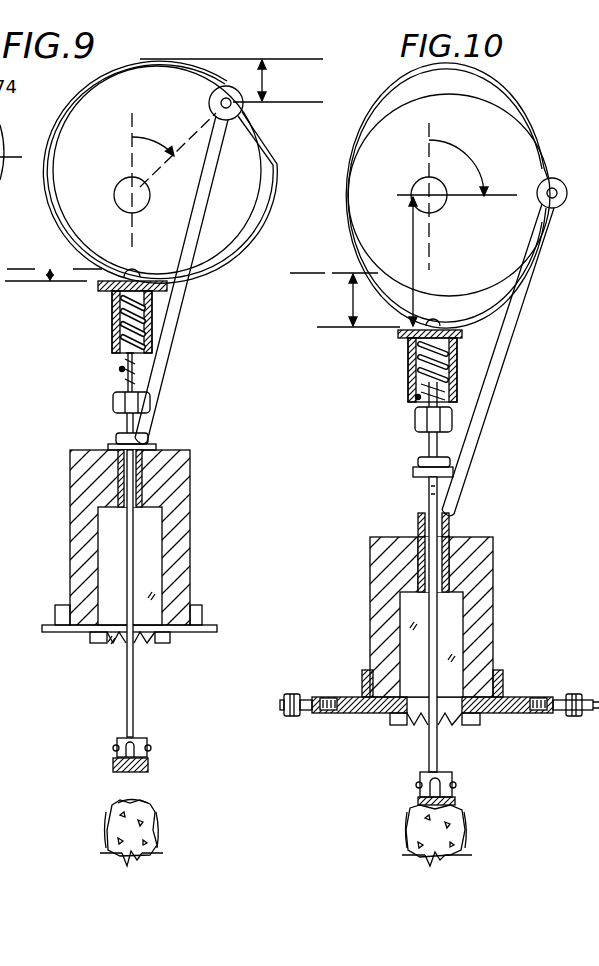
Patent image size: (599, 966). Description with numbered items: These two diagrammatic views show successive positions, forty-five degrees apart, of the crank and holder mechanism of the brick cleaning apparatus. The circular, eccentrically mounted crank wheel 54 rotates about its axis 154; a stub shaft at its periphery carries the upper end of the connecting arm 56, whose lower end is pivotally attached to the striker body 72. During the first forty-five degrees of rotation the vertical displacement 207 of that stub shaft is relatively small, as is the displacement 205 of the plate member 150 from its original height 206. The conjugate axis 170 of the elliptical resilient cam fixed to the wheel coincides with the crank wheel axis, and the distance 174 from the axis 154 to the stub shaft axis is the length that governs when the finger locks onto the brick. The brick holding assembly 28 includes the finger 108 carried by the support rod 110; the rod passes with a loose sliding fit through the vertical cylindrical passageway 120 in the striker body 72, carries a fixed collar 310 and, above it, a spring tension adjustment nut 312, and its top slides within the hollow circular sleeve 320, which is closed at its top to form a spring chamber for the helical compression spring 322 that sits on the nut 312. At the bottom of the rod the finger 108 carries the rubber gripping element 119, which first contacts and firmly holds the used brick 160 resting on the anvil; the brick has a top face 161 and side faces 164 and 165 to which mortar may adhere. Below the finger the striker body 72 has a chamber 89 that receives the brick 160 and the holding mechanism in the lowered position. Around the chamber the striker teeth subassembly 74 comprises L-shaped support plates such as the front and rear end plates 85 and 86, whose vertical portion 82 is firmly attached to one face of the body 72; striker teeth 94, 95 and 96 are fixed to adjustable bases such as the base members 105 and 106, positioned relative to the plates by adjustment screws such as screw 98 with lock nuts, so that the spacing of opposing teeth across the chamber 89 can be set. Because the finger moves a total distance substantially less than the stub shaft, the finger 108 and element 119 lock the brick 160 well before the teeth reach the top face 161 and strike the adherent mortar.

In FIG. 9, the crank wheel 54 is at (150, 105).
In FIG. 10, the crank wheel 54 is at (507, 164).
In FIG. 9, the axis of rotation 154 is at (128, 188).
In FIG. 10, the axis of rotation 154 is at (436, 199).
In FIG. 9, the vertical displacement of stub shaft 207 is at (231, 80).
In FIG. 9, the original height 206 is at (62, 262).
In FIG. 10, the original height 206 is at (355, 271).
In FIG. 9, the vertical displacement 205 is at (48, 277).
In FIG. 10, the vertical displacement 205 is at (353, 300).
In FIG. 9, the plate member 150 is at (168, 290).
In FIG. 10, the plate member 150 is at (398, 336).
In FIG. 9, the hollow circular sleeve 320 is at (112, 326).
In FIG. 10, the hollow circular sleeve 320 is at (408, 370).
In FIG. 9, the helical compression spring 322 is at (120, 370).
In FIG. 10, the helical compression spring 322 is at (416, 398).
In FIG. 9, the connecting arm 56 is at (172, 326).
In FIG. 10, the connecting arm 56 is at (472, 438).
In FIG. 9, the spring tension adjustment nut 312 is at (150, 398).
In FIG. 10, the spring tension adjustment nut 312 is at (415, 425).
In FIG. 9, the collar 310 is at (150, 441).
In FIG. 10, the collar 310 is at (413, 470).
In FIG. 9, the striker body 72 is at (190, 538).
In FIG. 10, the striker body 72 is at (493, 618).
In FIG. 9, the support rod 110 is at (135, 690).
In FIG. 10, the support rod 110 is at (428, 500).
In FIG. 9, the striker teeth subassembly 74 is at (50, 645).
In FIG. 9, the striker teeth 96 is at (96, 641).
In FIG. 10, the striker teeth 96 is at (395, 726).
In FIG. 9, the striker teeth 94 is at (124, 643).
In FIG. 9, the striker teeth 95 is at (160, 643).
In FIG. 10, the striker teeth 95 is at (485, 725).
In FIG. 9, the brick holding assembly 28 is at (143, 729).
In FIG. 9, the brick face 164 is at (105, 822).
In FIG. 10, the brick face 164 is at (408, 820).
In FIG. 9, the top face of brick 161 is at (145, 800).
In FIG. 9, the brick face 165 is at (160, 826).
In FIG. 10, the brick face 165 is at (466, 825).
In FIG. 9, the brick 160 is at (155, 845).
In FIG. 10, the brick 160 is at (426, 824).
In FIG. 10, the conjugate axis 170 is at (537, 192).
In FIG. 10, the distance 174 is at (415, 276).
In FIG. 10, the vertical cylindrical passageway 120 is at (450, 545).
In FIG. 10, the vertical portion of support plate 82 is at (497, 670).
In FIG. 10, the rear end teeth support plate 86 is at (366, 690).
In FIG. 10, the front end teeth support plate 85 is at (540, 695).
In FIG. 10, the adjustment screw 98 is at (577, 718).
In FIG. 10, the adjustable base 106 is at (355, 713).
In FIG. 10, the base member 105 is at (522, 712).
In FIG. 10, the chamber 89 is at (454, 685).
In FIG. 10, the finger 108 is at (418, 785).
In FIG. 10, the gripping element 119 is at (455, 800).